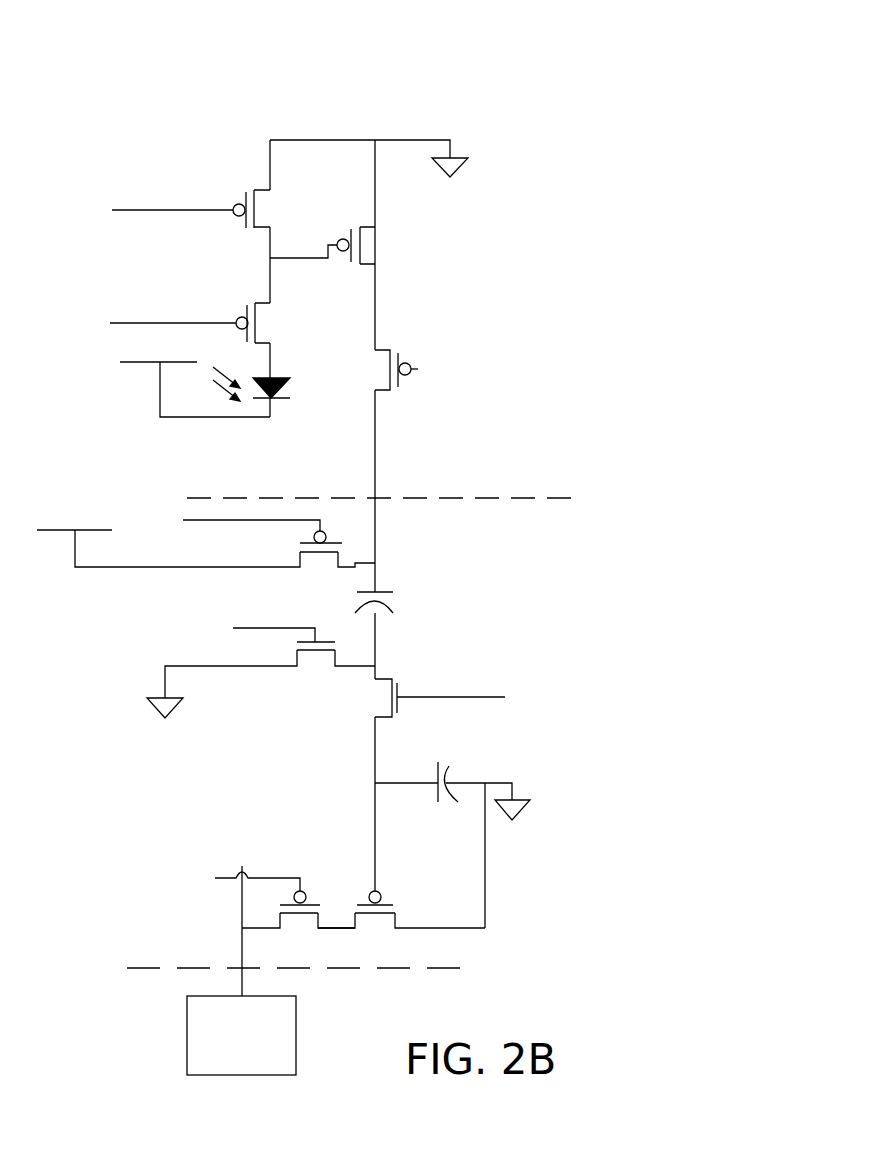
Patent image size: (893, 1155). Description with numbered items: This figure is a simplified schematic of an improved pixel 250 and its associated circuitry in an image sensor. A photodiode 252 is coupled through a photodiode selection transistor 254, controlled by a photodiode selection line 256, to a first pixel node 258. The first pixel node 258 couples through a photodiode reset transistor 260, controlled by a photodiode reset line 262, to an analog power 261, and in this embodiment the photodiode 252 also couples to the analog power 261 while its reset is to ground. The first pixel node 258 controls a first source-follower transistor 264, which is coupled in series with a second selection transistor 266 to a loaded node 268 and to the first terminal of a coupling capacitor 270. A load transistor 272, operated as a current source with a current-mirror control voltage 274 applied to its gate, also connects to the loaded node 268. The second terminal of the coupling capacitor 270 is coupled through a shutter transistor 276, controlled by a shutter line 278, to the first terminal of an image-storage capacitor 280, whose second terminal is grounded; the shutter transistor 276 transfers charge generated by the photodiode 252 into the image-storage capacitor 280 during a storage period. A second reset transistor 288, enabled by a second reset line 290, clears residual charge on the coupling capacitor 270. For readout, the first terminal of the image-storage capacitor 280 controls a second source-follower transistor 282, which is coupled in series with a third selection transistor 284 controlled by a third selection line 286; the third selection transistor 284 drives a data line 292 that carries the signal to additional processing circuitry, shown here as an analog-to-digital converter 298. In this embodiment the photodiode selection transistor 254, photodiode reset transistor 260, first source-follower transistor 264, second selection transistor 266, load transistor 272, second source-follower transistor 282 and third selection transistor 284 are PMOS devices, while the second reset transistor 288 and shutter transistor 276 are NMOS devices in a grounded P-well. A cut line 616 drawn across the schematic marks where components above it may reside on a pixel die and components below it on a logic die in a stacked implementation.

The improved pixel 250 is at (492, 80).
The photodiode 252 is at (277, 397).
The photodiode selection transistor 254 is at (248, 303).
The photodiode selection line 256 is at (200, 323).
The first pixel node 258 is at (272, 245).
The photodiode reset transistor 260 is at (265, 190).
The analog power 261 is at (187, 360).
The photodiode reset line 262 is at (200, 210).
The first source-follower transistor 264 is at (363, 257).
The second selection transistor 266 is at (412, 368).
The loaded node 268 is at (375, 475).
The coupling capacitor 270 is at (393, 592).
The load transistor 272 is at (332, 548).
The current-mirror control voltage 274 is at (233, 523).
The shutter transistor 276 is at (393, 683).
The shutter line 278 is at (475, 697).
The image-storage capacitor 280 is at (448, 770).
The second source-follower transistor 282 is at (363, 900).
The third selection transistor 284 is at (295, 888).
The third selection line 286 is at (230, 878).
The second reset transistor 288 is at (327, 658).
The second reset line 290 is at (290, 632).
The data line 292 is at (242, 862).
The ADC 298 is at (220, 1062).
The cut line 616 is at (252, 497).